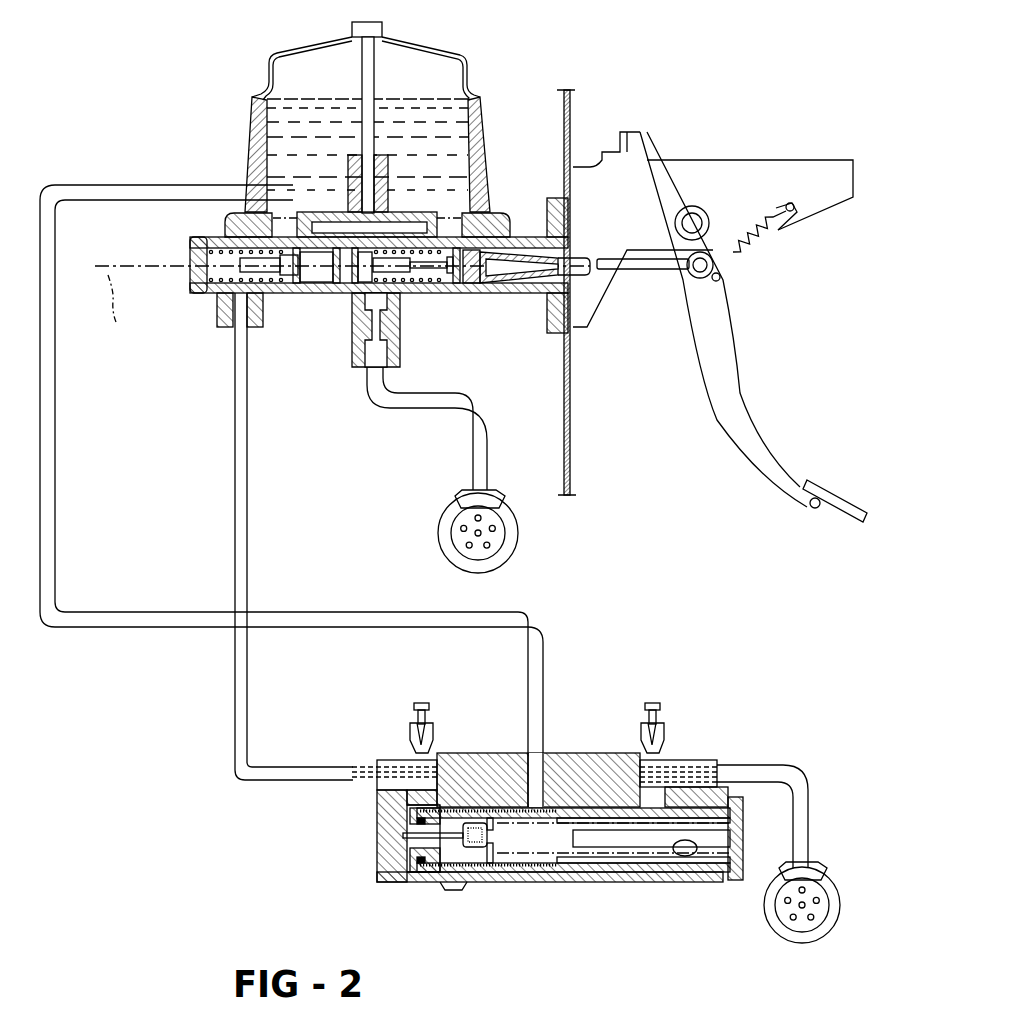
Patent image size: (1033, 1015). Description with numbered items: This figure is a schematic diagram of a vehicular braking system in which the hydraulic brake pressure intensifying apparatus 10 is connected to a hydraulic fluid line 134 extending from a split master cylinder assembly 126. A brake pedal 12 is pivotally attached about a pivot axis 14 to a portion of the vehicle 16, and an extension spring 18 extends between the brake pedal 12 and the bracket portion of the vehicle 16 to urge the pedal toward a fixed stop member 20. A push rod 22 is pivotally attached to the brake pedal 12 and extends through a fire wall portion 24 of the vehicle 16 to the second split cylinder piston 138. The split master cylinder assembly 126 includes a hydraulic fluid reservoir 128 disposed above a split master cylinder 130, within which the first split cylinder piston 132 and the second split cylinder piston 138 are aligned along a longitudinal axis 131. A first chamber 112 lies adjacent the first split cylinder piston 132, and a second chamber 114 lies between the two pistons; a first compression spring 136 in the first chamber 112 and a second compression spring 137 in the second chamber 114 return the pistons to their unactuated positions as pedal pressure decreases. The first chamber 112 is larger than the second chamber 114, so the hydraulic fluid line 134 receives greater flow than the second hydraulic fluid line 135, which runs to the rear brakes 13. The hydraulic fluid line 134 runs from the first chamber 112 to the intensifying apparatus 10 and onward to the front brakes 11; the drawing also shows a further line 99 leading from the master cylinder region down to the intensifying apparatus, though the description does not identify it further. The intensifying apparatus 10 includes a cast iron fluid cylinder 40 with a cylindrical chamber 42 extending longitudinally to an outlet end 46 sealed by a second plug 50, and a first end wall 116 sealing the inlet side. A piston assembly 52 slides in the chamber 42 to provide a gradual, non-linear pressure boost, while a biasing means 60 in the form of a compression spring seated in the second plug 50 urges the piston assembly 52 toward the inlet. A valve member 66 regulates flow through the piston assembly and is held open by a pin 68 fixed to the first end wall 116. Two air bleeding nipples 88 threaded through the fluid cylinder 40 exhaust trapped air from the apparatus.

The hydraulic brake pressure intensifying apparatus 10 is at (525, 791).
The front brakes 11 is at (766, 912).
The brake pedal 12 is at (851, 518).
The rear brakes 13 is at (443, 538).
The pivot axis 14 is at (694, 223).
The vehicle 16 is at (732, 165).
The extension spring 18 is at (755, 250).
The fixed stop member 20 is at (633, 133).
The push rod 22 is at (649, 270).
The fire wall portion 24 is at (565, 466).
The fluid cylinder 40 is at (378, 857).
The cylindrical chamber 42 is at (624, 865).
The outlet end 46 is at (690, 856).
The second plug 50 is at (742, 848).
The piston assembly 52 is at (492, 873).
The biasing means 60 is at (712, 813).
The valve member 66 is at (452, 812).
The pin 68 is at (418, 870).
The air bleeding nipples 88 is at (426, 705).
The conduit 99 is at (50, 415).
The first chamber 112 is at (223, 284).
The second chamber 114 is at (458, 270).
The first end wall 116 is at (412, 821).
The split master cylinder assembly 126 is at (193, 293).
The hydraulic fluid reservoir 128 is at (462, 95).
The split master cylinder 130 is at (432, 270).
The longitudinal axis 131 is at (341, 306).
The first split cylinder piston 132 is at (318, 262).
The hydraulic fluid line 134 is at (248, 395).
The second hydraulic fluid line 135 is at (385, 380).
The first compression spring 136 is at (215, 258).
The second compression spring 137 is at (424, 200).
The second split cylinder piston 138 is at (484, 272).